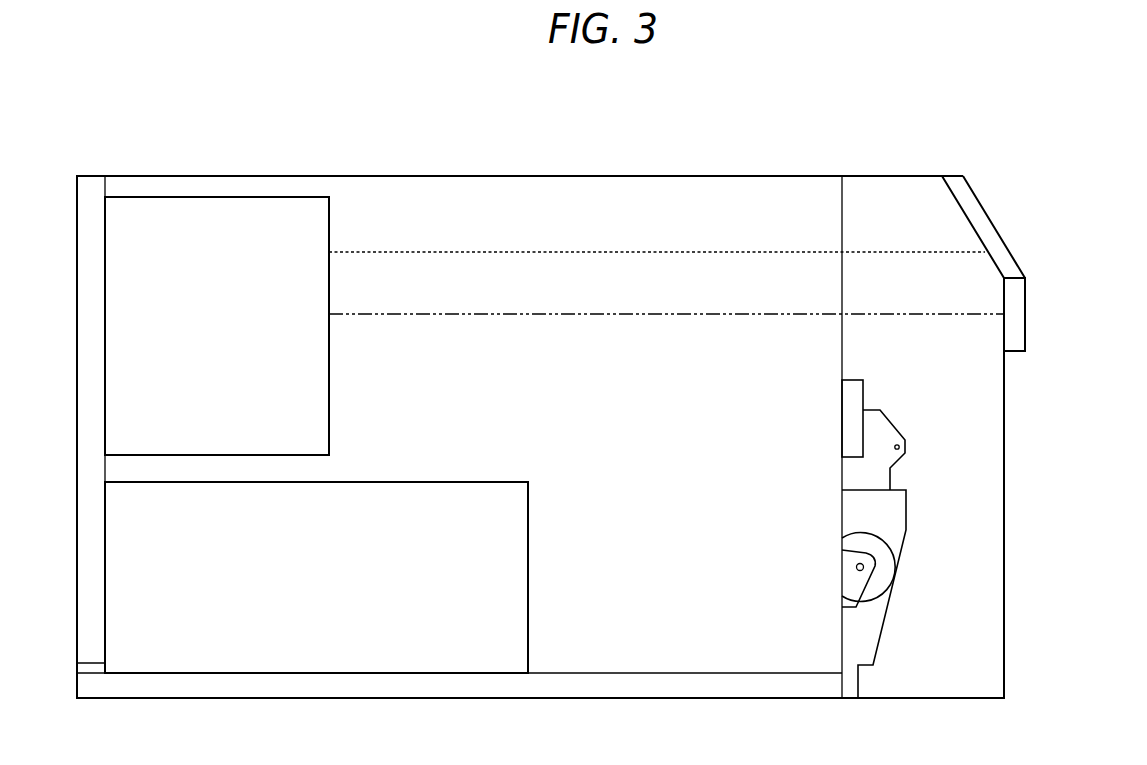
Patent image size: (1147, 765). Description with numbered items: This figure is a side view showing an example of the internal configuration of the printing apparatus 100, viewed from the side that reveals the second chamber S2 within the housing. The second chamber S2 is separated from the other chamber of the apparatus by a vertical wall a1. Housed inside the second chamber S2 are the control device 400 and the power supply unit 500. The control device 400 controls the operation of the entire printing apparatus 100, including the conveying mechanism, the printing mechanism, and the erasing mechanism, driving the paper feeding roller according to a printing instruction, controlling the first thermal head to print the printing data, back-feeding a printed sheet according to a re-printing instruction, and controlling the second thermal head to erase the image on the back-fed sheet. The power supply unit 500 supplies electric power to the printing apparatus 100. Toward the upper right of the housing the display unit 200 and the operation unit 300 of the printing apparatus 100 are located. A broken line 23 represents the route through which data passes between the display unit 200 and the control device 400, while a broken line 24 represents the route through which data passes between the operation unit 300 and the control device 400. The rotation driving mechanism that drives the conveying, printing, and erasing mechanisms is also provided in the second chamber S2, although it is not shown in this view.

The printing apparatus 100 is at (641, 175).
The display unit 200 is at (988, 216).
The operation unit 300 is at (1027, 300).
The control device 400 is at (330, 215).
The power supply unit 500 is at (528, 503).
The broken line 23 is at (716, 250).
The broken line 24 is at (737, 316).
The second chamber S2 is at (597, 398).
The vertical wall a1 is at (768, 642).